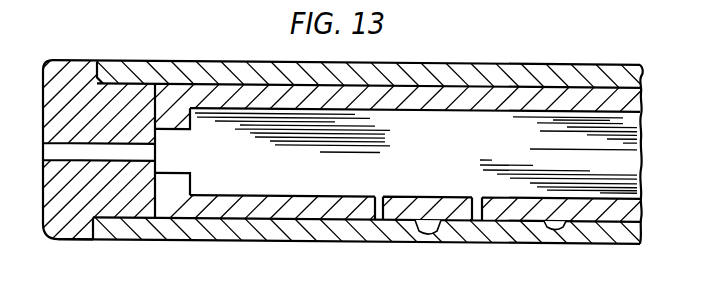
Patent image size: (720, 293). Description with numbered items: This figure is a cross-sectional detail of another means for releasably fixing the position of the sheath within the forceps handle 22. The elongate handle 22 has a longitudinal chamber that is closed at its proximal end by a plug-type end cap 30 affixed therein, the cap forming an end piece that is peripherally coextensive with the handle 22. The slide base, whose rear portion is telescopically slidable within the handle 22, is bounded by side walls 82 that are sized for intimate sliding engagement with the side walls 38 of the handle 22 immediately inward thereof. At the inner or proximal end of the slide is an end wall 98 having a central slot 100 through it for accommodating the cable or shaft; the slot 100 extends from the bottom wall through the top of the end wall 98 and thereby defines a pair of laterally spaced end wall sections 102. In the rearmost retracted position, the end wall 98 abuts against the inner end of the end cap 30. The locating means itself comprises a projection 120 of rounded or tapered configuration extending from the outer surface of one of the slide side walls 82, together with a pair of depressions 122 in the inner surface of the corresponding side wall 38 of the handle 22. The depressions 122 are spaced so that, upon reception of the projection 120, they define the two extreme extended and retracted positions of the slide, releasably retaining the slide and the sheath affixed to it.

The handle 22 is at (503, 54).
The end cap 30 is at (70, 249).
The side wall 38 is at (249, 233).
The side wall 82 is at (620, 208).
The end wall 98 is at (190, 177).
The central slot 100 is at (177, 156).
The end wall sections 102 is at (181, 125).
The projection 120 is at (430, 230).
The depressions 122 is at (555, 225).